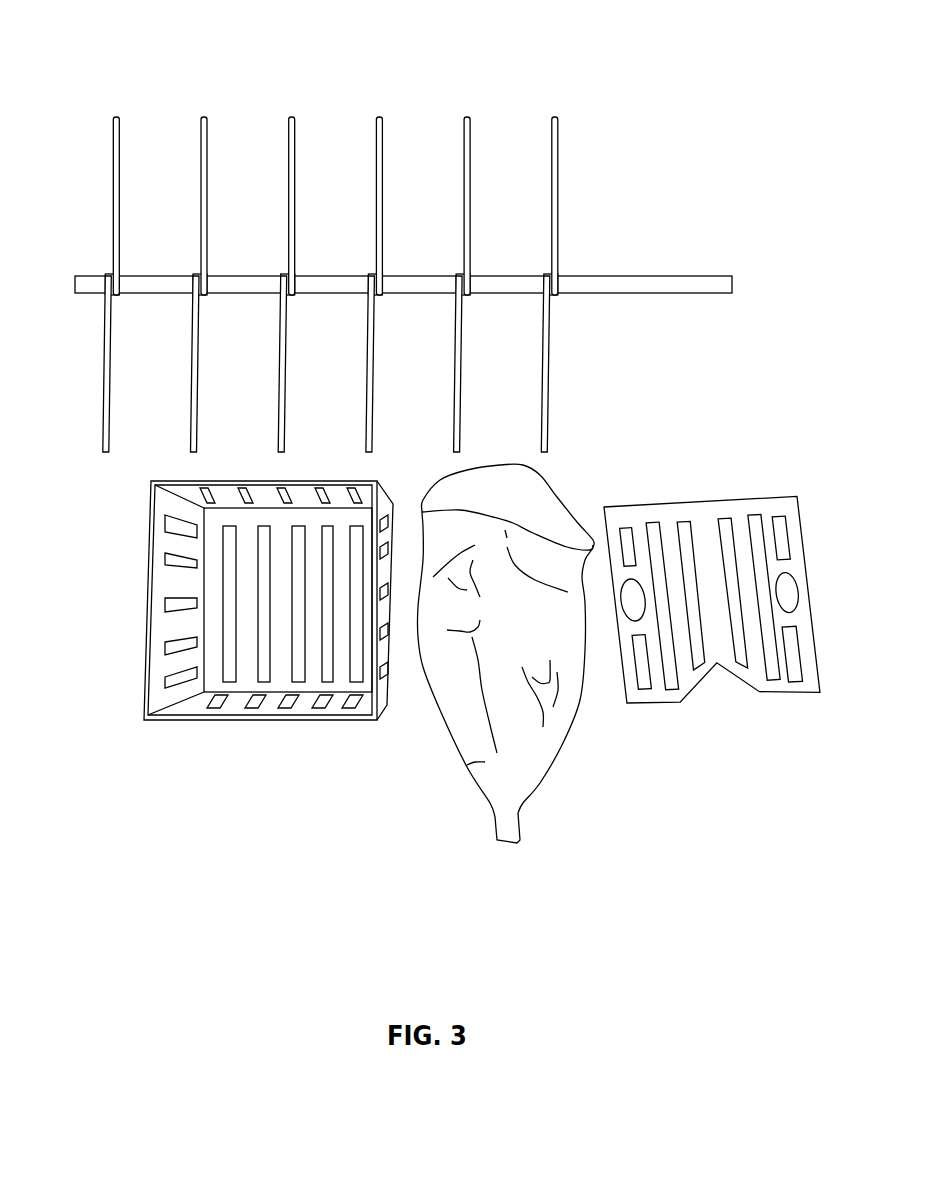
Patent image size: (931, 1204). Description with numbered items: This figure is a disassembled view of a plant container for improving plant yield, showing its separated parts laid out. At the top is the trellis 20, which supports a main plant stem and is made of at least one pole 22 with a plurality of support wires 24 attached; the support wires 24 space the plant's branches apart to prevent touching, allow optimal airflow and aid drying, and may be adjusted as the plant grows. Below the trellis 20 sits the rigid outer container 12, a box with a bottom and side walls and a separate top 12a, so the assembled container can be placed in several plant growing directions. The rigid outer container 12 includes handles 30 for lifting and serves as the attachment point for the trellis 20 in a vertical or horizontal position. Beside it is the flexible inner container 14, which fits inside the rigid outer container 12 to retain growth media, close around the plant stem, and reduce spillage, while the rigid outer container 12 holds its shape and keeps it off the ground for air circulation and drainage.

The trellis 20 is at (454, 62).
The pole 22 is at (613, 283).
The support wires 24 is at (119, 128).
The rigid outer container 12 is at (228, 719).
The top 12a is at (667, 678).
The flexible inner container 14 is at (487, 762).
The handles 30 is at (163, 589).